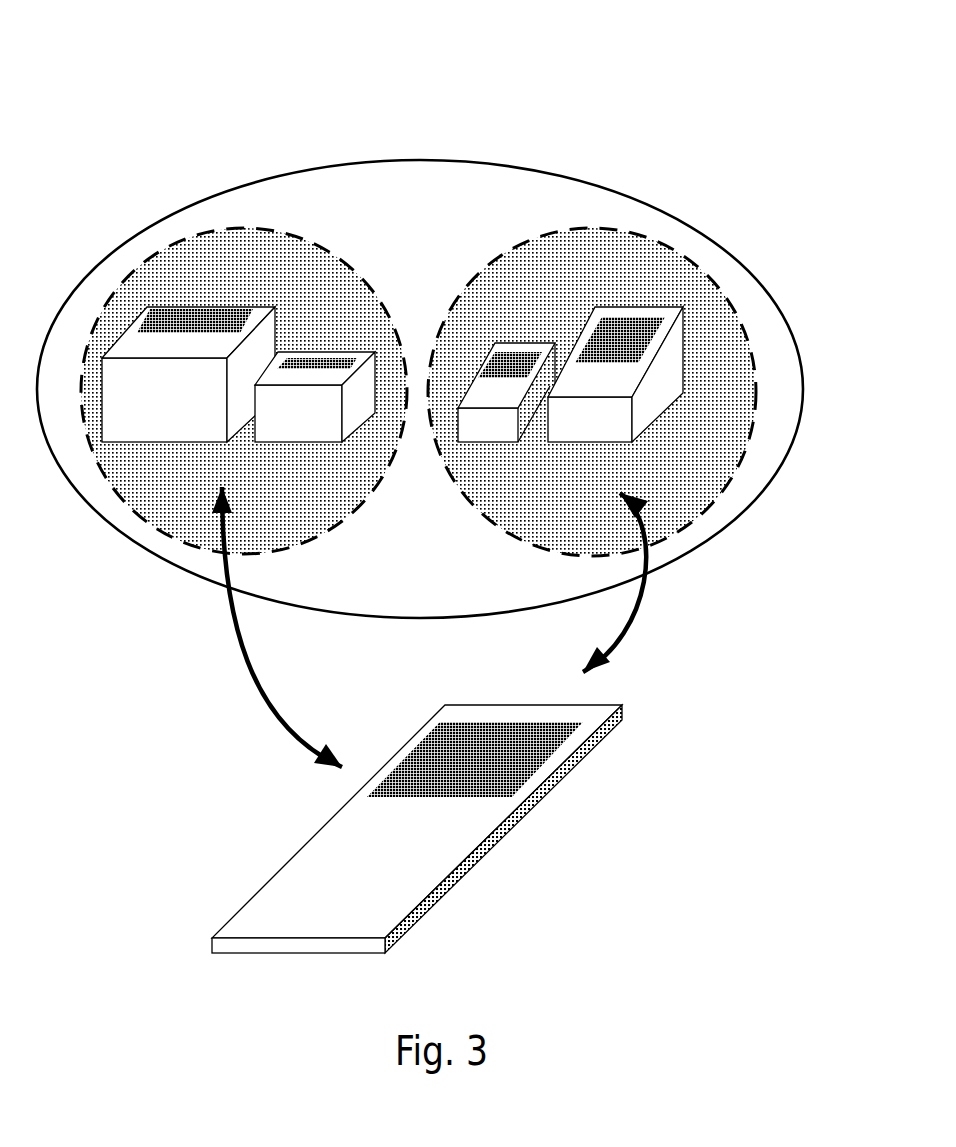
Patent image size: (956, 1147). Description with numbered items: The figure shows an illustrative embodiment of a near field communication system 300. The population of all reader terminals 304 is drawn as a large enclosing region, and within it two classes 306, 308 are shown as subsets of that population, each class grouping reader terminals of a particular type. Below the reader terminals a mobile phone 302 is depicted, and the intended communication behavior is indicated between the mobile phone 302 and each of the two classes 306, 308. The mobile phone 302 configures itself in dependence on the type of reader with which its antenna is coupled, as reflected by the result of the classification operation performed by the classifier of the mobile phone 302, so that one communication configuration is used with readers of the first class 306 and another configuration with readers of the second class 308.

The near field communication system 300 is at (190, 100).
The mobile phone 302 is at (382, 922).
The all reader terminals 304 is at (432, 579).
The class 306 is at (310, 498).
The class 308 is at (553, 498).